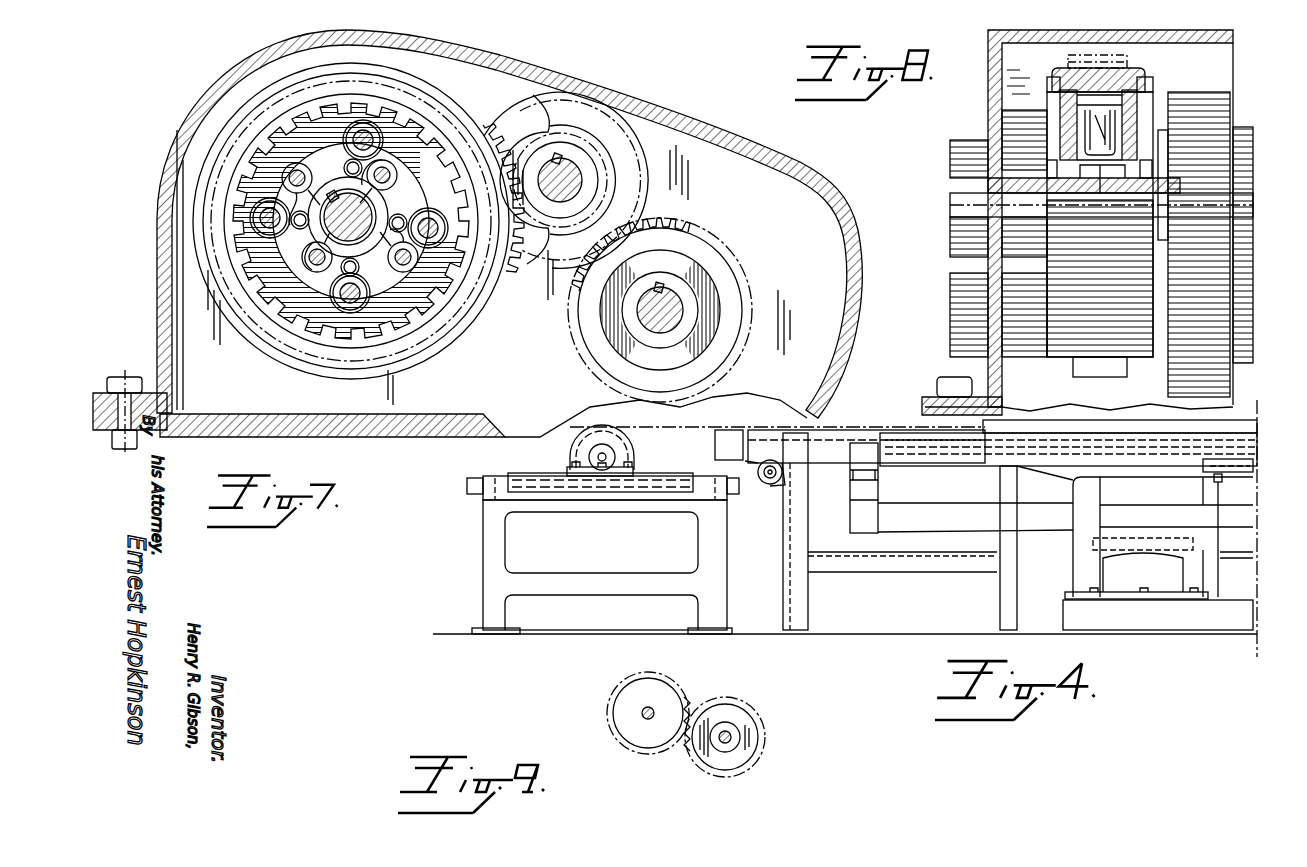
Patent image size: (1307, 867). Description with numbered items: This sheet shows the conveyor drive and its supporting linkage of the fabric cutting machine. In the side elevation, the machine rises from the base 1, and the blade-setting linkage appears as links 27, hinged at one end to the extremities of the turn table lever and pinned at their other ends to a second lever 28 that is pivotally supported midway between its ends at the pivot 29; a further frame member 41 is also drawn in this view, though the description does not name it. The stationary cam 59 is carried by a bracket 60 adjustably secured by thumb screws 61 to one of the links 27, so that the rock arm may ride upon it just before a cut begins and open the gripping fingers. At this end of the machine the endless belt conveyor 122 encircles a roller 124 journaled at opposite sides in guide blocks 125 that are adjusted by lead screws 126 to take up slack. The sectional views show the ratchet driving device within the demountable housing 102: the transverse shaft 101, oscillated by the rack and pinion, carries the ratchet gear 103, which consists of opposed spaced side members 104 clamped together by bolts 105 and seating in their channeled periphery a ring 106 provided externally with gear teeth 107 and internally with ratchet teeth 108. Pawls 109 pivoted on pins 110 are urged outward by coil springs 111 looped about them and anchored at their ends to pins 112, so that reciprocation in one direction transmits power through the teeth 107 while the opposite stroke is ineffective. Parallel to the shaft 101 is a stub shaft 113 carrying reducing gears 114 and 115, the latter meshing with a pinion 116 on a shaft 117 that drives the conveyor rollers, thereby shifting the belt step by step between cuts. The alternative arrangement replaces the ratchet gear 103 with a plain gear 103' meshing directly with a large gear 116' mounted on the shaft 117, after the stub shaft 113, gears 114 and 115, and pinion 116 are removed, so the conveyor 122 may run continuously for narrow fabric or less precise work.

In FIG. 4, the base of the machine 1 is at (1152, 620).
In FIG. 4, the links 27 is at (923, 460).
In FIG. 4, the second lever 28 is at (975, 517).
In FIG. 4, the pivot 29 is at (1158, 591).
In FIG. 4, the support column 41 is at (1087, 425).
In FIG. 4, the cam 59 is at (1213, 418).
In FIG. 4, the bracket 60 is at (1203, 453).
In FIG. 4, the thumb screws 61 is at (1226, 478).
In FIG. 7, the transverse shaft 101 is at (298, 266).
In FIG. 8, the transverse shaft 101 is at (960, 208).
In FIG. 9, the transverse shaft 101 is at (648, 722).
In FIG. 7, the demountable housing 102 is at (820, 212).
In FIG. 8, the demountable housing 102 is at (988, 94).
In FIG. 7, the ratchet gear 103 is at (351, 233).
In FIG. 8, the ratchet gear 103 is at (1077, 233).
In FIG. 9, the gear 103' is at (659, 703).
In FIG. 8, the side members 104 is at (1050, 77).
In FIG. 7, the bolts 105 is at (385, 172).
In FIG. 8, the bolts 105 is at (1049, 172).
In FIG. 8, the ring 106 is at (1140, 69).
In FIG. 7, the gear teeth 107 is at (495, 150).
In FIG. 8, the gear teeth 107 is at (1108, 62).
In FIG. 7, the ratchet teeth 108 is at (482, 268).
In FIG. 8, the ratchet teeth 108 is at (1090, 108).
In FIG. 7, the pawls 109 is at (278, 288).
In FIG. 8, the pawls 109 is at (1105, 133).
In FIG. 7, the pins 110 is at (436, 231).
In FIG. 7, the coil springs 111 is at (366, 131).
In FIG. 8, the coil springs 111 is at (1095, 190).
In FIG. 7, the pins 112 is at (346, 172).
In FIG. 8, the pins 112 is at (1092, 162).
In FIG. 7, the stub shaft 113 is at (578, 172).
In FIG. 7, the reducing gear 114 is at (533, 147).
In FIG. 7, the reducing gear 115 is at (563, 260).
In FIG. 8, the reducing gear 115 is at (1242, 150).
In FIG. 7, the pinion 116 is at (636, 317).
In FIG. 9, the large gear 116' is at (740, 734).
In FIG. 7, the shaft 117 is at (668, 306).
In FIG. 8, the shaft 117 is at (1215, 305).
In FIG. 9, the shaft 117 is at (727, 748).
In FIG. 4, the belt conveyor 122 is at (702, 462).
In FIG. 4, the roller 124 is at (574, 446).
In FIG. 4, the guide blocks 125 is at (613, 463).
In FIG. 4, the lead screws 126 is at (467, 493).